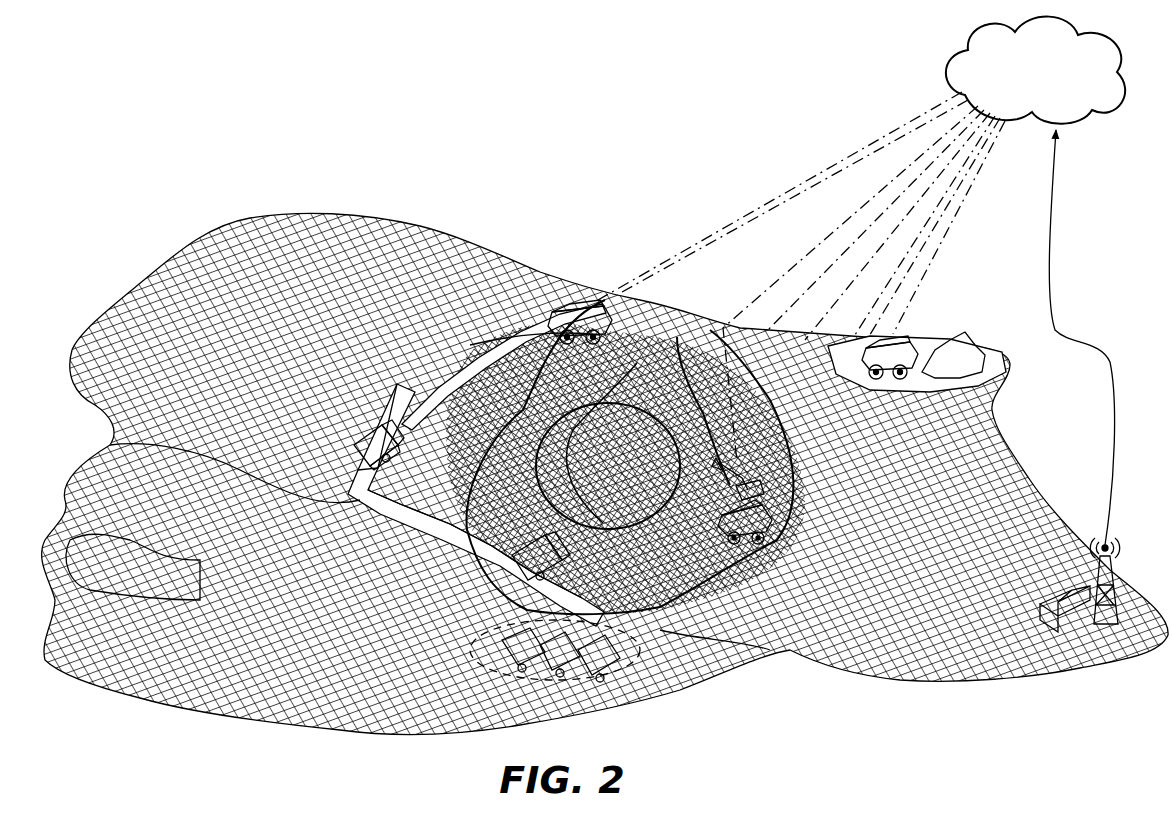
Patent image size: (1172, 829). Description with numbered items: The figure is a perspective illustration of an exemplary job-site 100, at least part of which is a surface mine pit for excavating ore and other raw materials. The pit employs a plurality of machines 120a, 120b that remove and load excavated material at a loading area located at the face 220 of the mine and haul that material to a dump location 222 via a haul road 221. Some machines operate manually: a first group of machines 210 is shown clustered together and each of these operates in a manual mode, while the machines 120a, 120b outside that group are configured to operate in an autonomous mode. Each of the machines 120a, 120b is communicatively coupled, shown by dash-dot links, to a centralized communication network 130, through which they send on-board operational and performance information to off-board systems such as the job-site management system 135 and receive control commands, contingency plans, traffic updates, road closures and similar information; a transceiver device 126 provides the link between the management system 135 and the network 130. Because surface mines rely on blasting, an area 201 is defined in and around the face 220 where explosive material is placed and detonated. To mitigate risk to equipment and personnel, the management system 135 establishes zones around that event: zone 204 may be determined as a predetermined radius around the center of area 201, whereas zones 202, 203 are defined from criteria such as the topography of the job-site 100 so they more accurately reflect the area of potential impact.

The job-site 100 is at (278, 143).
The communication network 130 is at (965, 48).
The machine 120a is at (725, 505).
The machine 120b is at (578, 318).
The transceiver device 126 is at (1100, 540).
The job-site management system 135 is at (1040, 612).
The area 201 is at (620, 457).
The zone 202 is at (575, 440).
The zone 203 is at (478, 532).
The zone 204 is at (570, 416).
The first group of machines 210 is at (645, 662).
The face of mine 220 is at (640, 385).
The haul road 221 is at (360, 482).
The dump location 222 is at (958, 348).